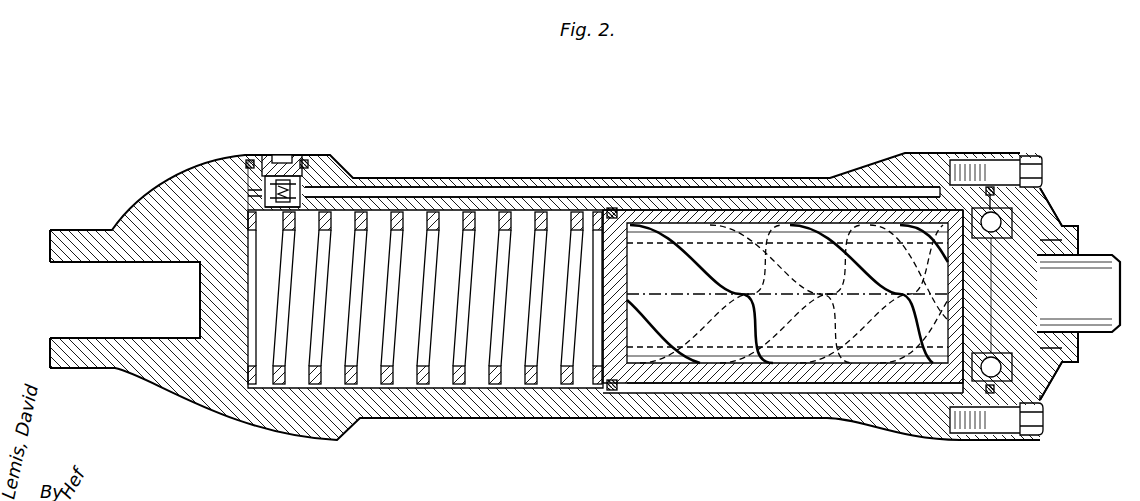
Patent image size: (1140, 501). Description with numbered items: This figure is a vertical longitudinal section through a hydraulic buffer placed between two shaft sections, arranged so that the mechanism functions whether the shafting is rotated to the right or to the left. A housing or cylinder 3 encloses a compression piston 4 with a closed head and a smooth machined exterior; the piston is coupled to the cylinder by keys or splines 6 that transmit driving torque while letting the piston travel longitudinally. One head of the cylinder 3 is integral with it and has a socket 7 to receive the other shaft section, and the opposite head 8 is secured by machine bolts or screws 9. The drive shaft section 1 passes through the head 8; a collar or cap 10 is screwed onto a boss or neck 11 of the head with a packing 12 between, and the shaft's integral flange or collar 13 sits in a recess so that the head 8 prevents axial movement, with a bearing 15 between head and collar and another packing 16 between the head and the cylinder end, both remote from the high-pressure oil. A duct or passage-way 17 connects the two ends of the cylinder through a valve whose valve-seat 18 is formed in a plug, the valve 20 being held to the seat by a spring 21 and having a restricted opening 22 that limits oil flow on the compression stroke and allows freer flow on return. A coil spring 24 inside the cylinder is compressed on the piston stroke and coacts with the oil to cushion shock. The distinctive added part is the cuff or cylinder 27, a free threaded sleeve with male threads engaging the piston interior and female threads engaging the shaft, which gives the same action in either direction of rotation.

The shaft section 1 is at (1096, 335).
The housing or cylinder 3 is at (640, 178).
The compression piston 4 is at (728, 220).
The keys or splines 6 is at (783, 390).
The socket 7 is at (56, 309).
The head 8 is at (990, 192).
The machine bolts or screws 9 is at (1030, 172).
The collar or cap 10 is at (1080, 242).
The boss or neck 11 is at (1050, 360).
The packing 12 is at (1050, 226).
The flange or collar 13 is at (960, 385).
The bearing 15 is at (1012, 212).
The packing 16 is at (995, 190).
The duct or passage-way 17 is at (530, 190).
The valve-seat 18 is at (248, 190).
The valve 20 is at (278, 207).
The spring 21 is at (300, 186).
The restricted opening 22 is at (283, 175).
The coil spring 24 is at (440, 236).
The cuff or cylinder 27 is at (814, 226).